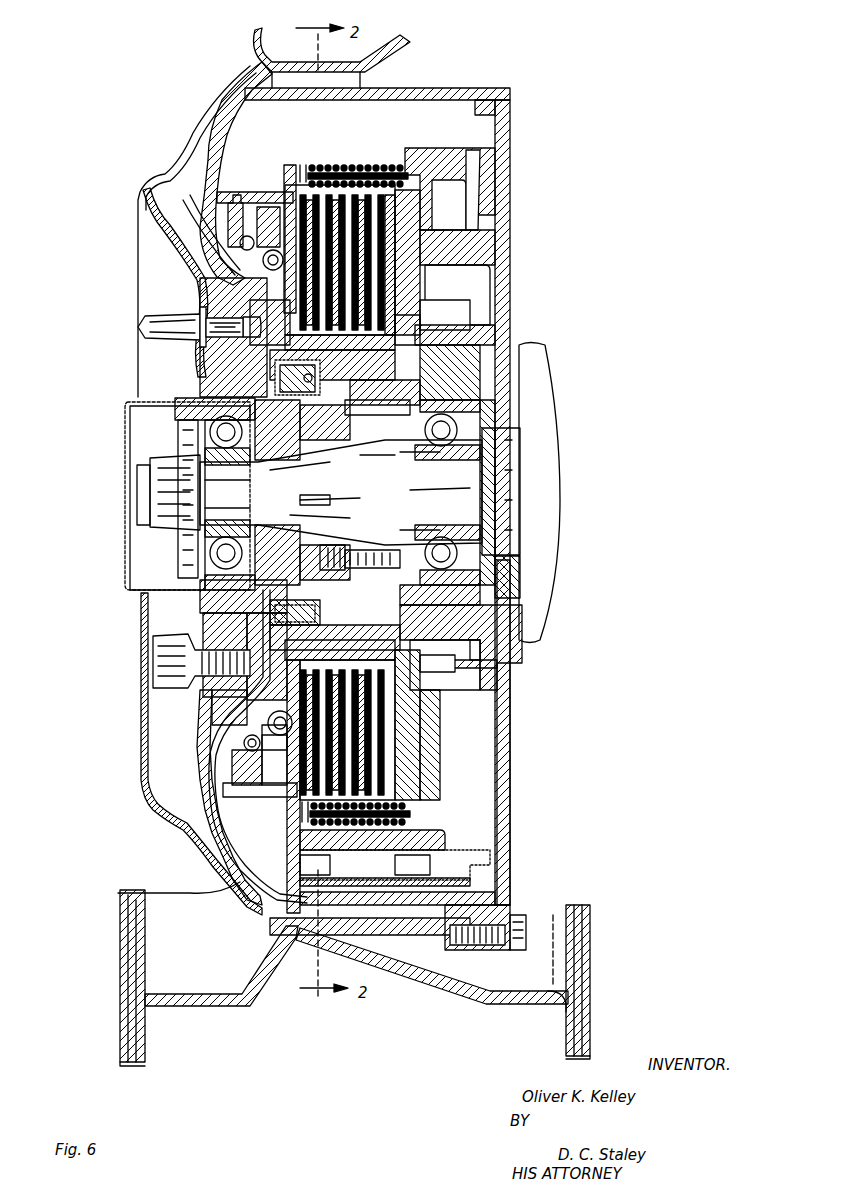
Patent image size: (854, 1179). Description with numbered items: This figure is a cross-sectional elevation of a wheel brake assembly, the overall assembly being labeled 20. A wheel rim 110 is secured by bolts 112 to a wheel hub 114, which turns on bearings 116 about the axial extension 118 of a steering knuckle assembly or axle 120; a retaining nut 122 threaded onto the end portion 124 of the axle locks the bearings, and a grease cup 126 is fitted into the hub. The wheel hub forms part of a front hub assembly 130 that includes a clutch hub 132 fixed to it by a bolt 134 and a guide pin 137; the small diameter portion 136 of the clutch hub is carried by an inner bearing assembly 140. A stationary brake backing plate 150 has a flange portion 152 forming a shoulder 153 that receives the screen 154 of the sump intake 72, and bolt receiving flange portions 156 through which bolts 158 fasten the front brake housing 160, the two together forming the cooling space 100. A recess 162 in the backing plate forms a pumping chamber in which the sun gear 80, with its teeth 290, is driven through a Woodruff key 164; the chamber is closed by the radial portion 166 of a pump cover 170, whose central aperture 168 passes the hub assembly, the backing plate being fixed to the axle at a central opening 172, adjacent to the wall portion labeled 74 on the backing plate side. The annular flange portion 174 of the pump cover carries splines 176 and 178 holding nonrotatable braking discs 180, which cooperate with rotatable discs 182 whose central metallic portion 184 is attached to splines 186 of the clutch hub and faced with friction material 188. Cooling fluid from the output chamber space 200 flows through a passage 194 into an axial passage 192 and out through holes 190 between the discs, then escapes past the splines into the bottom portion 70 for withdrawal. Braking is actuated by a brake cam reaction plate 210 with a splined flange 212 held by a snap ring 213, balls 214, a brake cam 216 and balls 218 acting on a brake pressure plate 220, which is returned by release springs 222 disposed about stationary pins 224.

The transmission housing 20 is at (510, 100).
The bottom portion 70 is at (265, 868).
The sump intake 72 is at (432, 870).
The cylinder wall 74 is at (445, 330).
The sun gear 80 is at (450, 633).
The space 100 is at (413, 97).
The wheel rim 110 is at (268, 942).
The bolts 112 is at (158, 652).
The wheel hub 114 is at (195, 605).
The bearings 116 is at (238, 562).
The axial extension 118 is at (465, 500).
The wheel steering knuckle assembly 120 is at (548, 455).
The retaining nut 122 is at (152, 540).
The end portion 124 is at (148, 490).
The grease cup 126 is at (188, 555).
The front hub assembly 130 is at (372, 491).
The clutch hub 132 is at (385, 545).
The bolt 134 is at (383, 510).
The small diameter portion 136 is at (418, 580).
The guide pin 137 is at (402, 440).
The bearing assembly 140 is at (464, 492).
The brake backing plate 150 is at (505, 735).
The flange portion 152 is at (372, 862).
The shoulder 153 is at (323, 863).
The screen 154 is at (370, 922).
The bolt receiving flange portions 156 is at (510, 910).
The bolts 158 is at (526, 925).
The front brake housing 160 is at (205, 825).
The recess 162 is at (480, 677).
The Woodruff key 164 is at (470, 612).
The radial portion 166 is at (412, 772).
The central aperture 168 is at (437, 663).
The pump cover 170 is at (415, 740).
The central opening 172 is at (520, 560).
The annular flange portion 174 is at (225, 790).
The splines 176 is at (270, 798).
The splines 178 is at (265, 190).
The nonrotatable braking discs 180 is at (345, 200).
The rotatable discs 182 is at (410, 224).
The central metallic portion 184 is at (382, 240).
The splines 186 is at (385, 325).
The friction material 188 is at (378, 700).
The holes 190 is at (332, 365).
The passage 192 is at (382, 360).
The passage 194 is at (415, 304).
The output chamber space 200 is at (490, 262).
The brake cam reaction plate 210 is at (305, 245).
The splined flange 212 is at (240, 205).
The internal snap ring 213 is at (310, 215).
The balls 214 is at (265, 270).
The brake cam 216 is at (270, 285).
The balls 218 is at (270, 720).
The brake pressure plate 220 is at (200, 305).
The pressure plate release springs 222 is at (312, 172).
The pins 224 is at (410, 172).
The teeth 290 is at (445, 657).